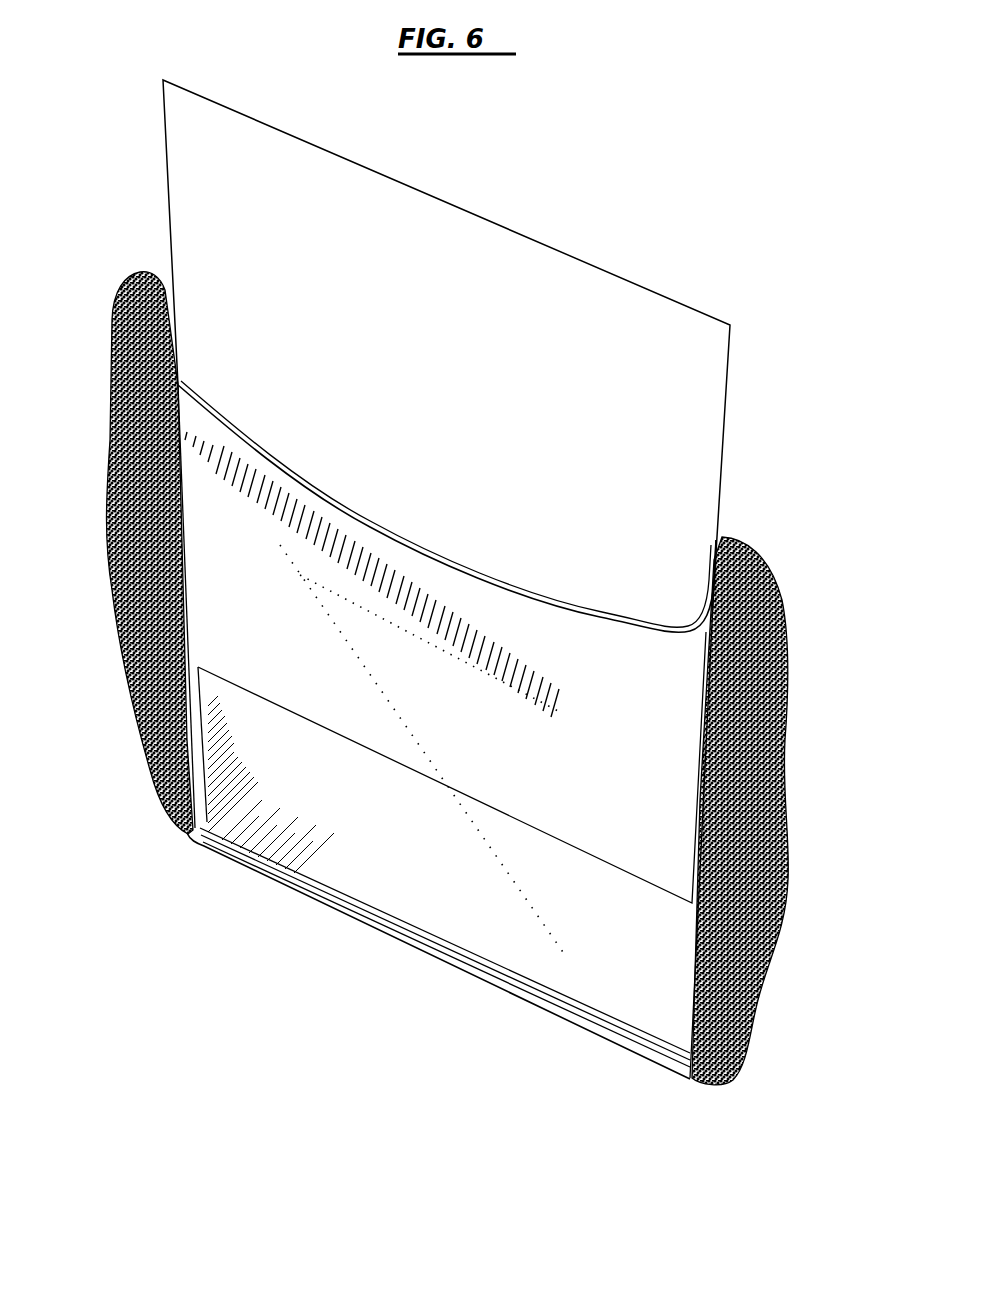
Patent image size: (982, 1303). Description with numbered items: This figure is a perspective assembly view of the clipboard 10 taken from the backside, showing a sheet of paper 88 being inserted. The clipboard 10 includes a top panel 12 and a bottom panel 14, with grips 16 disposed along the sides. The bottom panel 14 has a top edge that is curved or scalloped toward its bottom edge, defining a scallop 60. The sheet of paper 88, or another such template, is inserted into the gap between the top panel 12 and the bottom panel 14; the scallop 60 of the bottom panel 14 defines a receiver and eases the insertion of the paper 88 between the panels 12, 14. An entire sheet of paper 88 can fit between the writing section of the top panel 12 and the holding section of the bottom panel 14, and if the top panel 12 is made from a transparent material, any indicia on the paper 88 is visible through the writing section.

The clipboard 10 is at (136, 193).
The top panel 12 is at (720, 532).
The bottom panel 14 is at (485, 926).
The grips 16 is at (108, 548).
The scallop 60 is at (598, 615).
The sheet of paper 88 is at (518, 232).